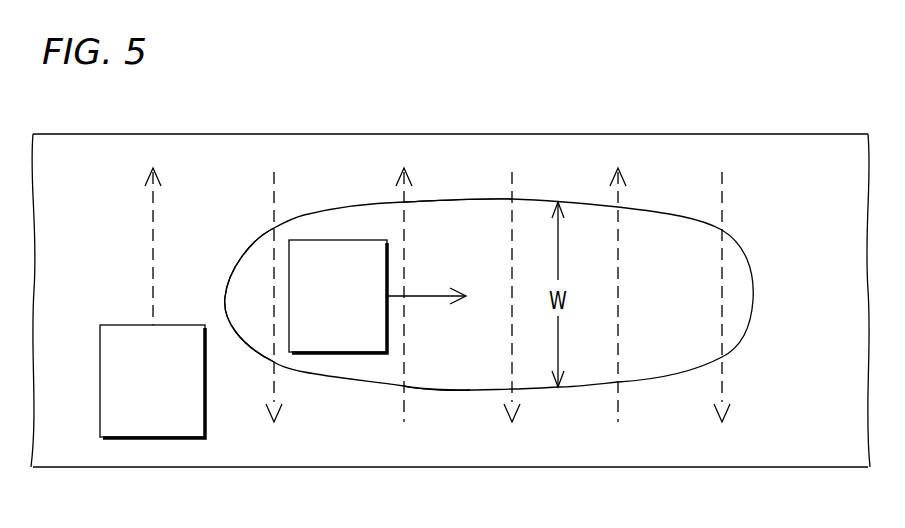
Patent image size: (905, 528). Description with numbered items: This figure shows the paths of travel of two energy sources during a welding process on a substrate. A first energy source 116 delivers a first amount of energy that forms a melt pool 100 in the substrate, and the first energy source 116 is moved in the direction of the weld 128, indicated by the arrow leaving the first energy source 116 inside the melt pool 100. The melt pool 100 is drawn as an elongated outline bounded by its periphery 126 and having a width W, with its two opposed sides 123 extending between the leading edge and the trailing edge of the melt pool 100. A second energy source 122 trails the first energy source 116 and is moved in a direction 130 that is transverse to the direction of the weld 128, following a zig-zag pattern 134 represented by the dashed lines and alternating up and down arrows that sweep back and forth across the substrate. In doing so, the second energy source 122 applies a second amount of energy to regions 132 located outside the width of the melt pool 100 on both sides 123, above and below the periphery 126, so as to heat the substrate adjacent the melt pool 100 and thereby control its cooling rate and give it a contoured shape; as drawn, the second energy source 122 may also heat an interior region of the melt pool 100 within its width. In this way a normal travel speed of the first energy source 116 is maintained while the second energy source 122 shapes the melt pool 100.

The melt pool 100 is at (253, 282).
The first energy source 116 is at (330, 240).
The second energy source 122 is at (136, 325).
The sides of the melt pool 123 is at (305, 215).
The periphery of the melt pool 126 is at (228, 292).
The direction of the weld 128 is at (428, 294).
The direction transverse to the weld 130 is at (724, 380).
The regions 132 is at (440, 197).
The zig-zag pattern 134 is at (737, 182).